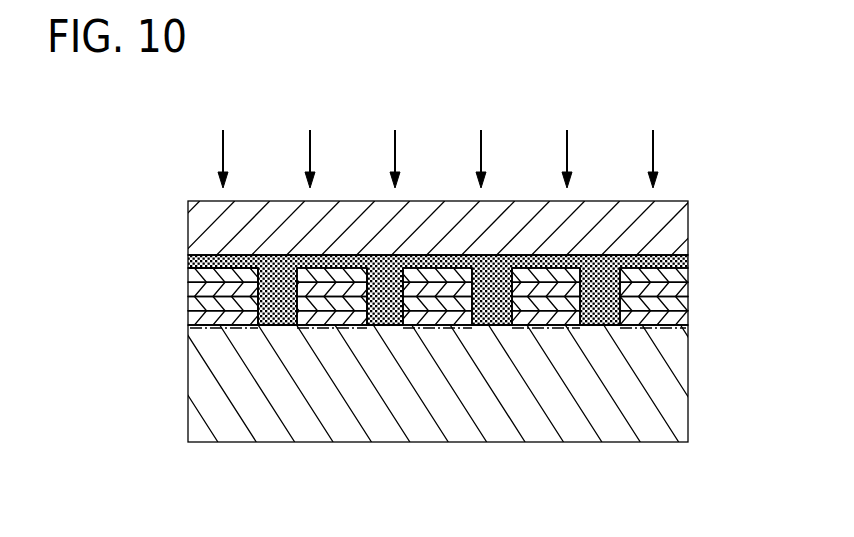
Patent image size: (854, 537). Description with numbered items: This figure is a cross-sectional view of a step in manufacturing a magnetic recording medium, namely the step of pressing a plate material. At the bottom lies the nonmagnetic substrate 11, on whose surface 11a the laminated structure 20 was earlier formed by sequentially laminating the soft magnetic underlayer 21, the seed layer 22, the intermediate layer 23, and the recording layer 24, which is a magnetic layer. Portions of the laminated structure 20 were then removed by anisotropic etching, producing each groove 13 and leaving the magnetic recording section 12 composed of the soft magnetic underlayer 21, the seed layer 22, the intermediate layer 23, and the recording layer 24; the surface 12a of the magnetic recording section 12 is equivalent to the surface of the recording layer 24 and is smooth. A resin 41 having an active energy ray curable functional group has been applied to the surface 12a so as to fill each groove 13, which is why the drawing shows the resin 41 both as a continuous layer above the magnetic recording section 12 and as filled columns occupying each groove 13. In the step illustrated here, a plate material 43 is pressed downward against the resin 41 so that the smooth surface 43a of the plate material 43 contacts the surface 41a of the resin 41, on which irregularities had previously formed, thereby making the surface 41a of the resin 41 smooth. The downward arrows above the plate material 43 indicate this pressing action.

The nonmagnetic substrate 11 is at (682, 381).
The surface of the nonmagnetic substrate 11a is at (668, 306).
The magnetic recording section 12 is at (223, 329).
The surface of the magnetic recording section 12a is at (222, 267).
The groove 13 is at (257, 303).
The laminated structure 20 is at (367, 298).
The soft magnetic underlayer 21 is at (393, 333).
The seed layer 22 is at (188, 304).
The intermediate layer 23 is at (188, 289).
The recording layer 24 is at (188, 273).
The resin 41 is at (385, 283).
The surface of the resin 41a is at (547, 255).
The plate material 43 is at (680, 226).
The smooth surface of the plate material 43a is at (432, 257).